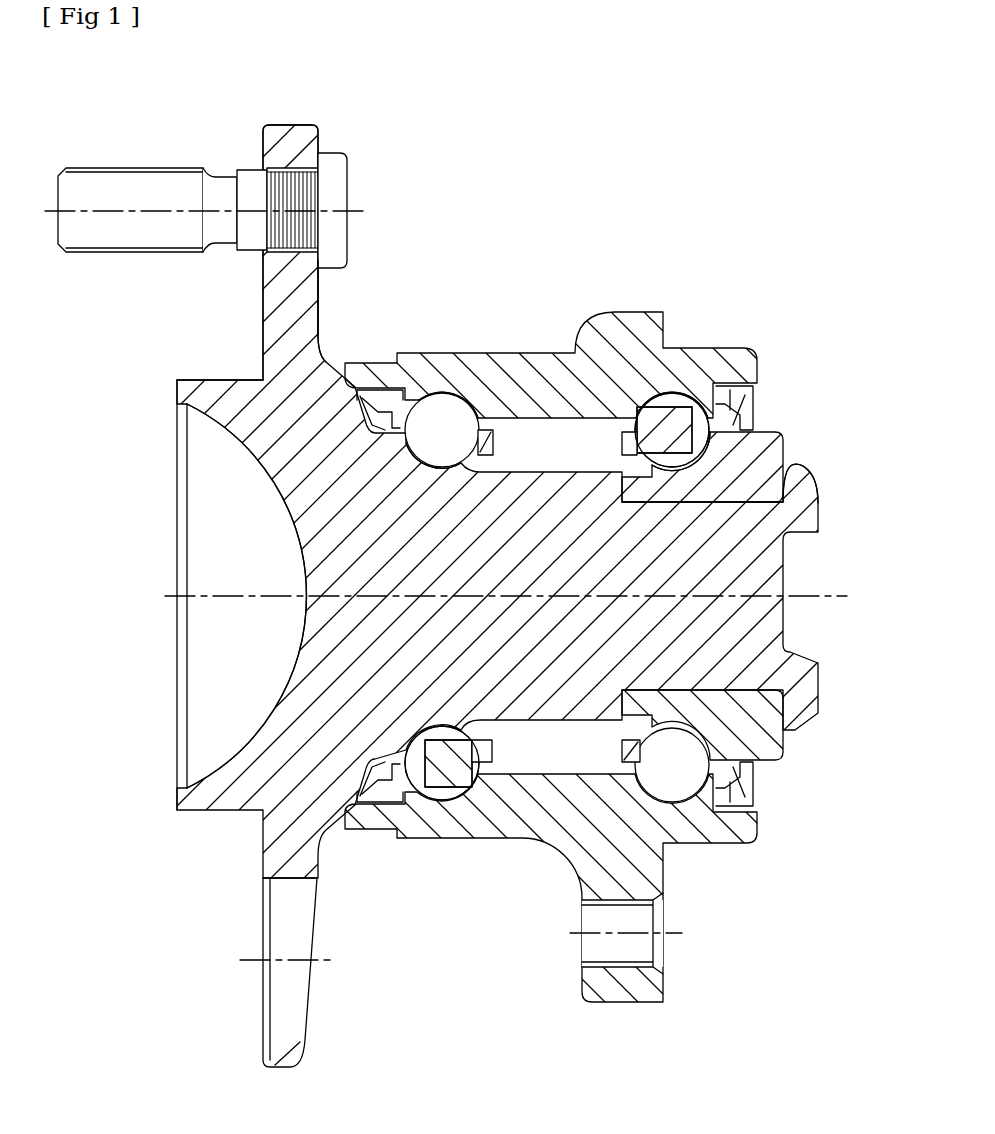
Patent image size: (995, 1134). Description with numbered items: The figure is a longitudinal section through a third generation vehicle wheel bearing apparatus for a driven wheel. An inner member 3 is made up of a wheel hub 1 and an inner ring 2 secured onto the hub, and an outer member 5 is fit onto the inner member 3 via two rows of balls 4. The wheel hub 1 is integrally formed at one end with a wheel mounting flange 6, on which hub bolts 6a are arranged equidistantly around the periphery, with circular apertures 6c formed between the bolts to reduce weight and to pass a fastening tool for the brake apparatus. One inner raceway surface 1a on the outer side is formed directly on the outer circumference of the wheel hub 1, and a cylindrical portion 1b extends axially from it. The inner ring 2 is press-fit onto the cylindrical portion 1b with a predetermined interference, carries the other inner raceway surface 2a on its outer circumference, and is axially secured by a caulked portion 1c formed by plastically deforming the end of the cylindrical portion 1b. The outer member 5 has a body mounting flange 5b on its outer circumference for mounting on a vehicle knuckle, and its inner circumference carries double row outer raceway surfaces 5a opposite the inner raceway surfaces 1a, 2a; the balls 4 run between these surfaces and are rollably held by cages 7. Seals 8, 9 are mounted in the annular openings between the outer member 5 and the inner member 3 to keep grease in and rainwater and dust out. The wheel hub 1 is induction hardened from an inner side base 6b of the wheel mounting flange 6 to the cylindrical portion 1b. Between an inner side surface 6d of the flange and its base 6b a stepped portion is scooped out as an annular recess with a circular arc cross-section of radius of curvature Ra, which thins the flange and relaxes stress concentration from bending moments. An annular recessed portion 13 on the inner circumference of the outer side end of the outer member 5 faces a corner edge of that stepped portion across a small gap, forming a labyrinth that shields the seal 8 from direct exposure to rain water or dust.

The wheel hub 1 is at (293, 467).
The inner raceway surface 1a is at (447, 430).
The cylindrical portion 1b is at (743, 487).
The caulked portion 1c is at (800, 500).
The inner ring 2 is at (752, 465).
The inner raceway surface 2a is at (670, 450).
The inner member 3 is at (272, 533).
The balls 4 is at (650, 778).
The outer member 5 is at (525, 372).
The outer raceway surfaces 5a is at (438, 412).
The body mounting flange 5b is at (633, 982).
The wheel mounting flange 6 is at (290, 135).
The hub bolts 6a is at (193, 188).
The inner side base 6b is at (353, 400).
The circular apertures 6c is at (287, 885).
The inner side surface 6d is at (322, 320).
The cages 7 is at (628, 745).
The seal 8 is at (350, 797).
The seal 9 is at (757, 777).
The annular recessed portion 13 is at (362, 392).
The radius of curvature Ra is at (343, 366).